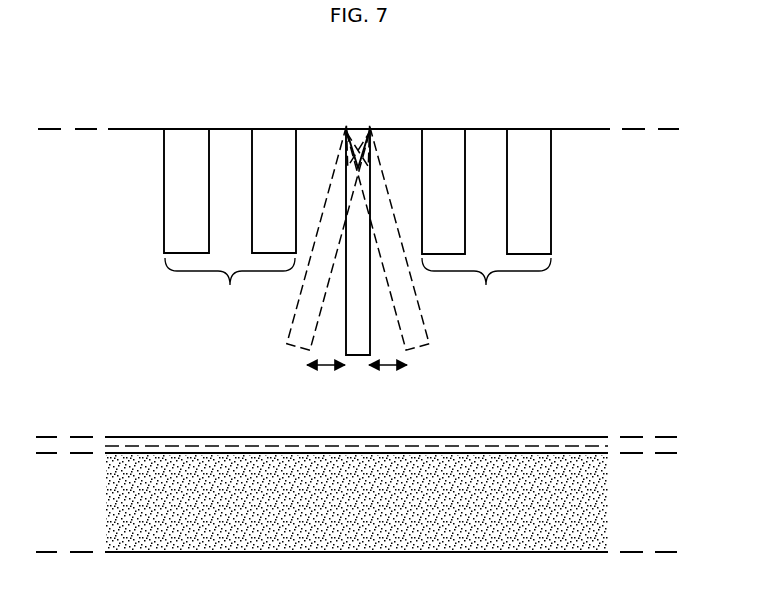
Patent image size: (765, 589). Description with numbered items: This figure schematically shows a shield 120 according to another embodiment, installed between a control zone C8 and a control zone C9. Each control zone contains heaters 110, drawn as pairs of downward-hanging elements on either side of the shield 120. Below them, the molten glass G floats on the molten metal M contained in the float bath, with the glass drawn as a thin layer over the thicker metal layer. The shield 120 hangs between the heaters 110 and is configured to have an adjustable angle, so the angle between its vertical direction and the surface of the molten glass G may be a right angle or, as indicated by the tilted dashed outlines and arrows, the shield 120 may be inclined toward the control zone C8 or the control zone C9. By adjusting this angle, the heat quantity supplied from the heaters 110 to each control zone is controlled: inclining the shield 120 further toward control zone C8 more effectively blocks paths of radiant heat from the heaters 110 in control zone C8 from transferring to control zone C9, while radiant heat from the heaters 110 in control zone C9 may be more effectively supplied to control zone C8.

The heater 110 is at (276, 147).
The shield 120 is at (359, 147).
The control zone C8 is at (230, 286).
The control zone C9 is at (486, 288).
The molten glass G is at (540, 448).
The molten metal M is at (593, 500).